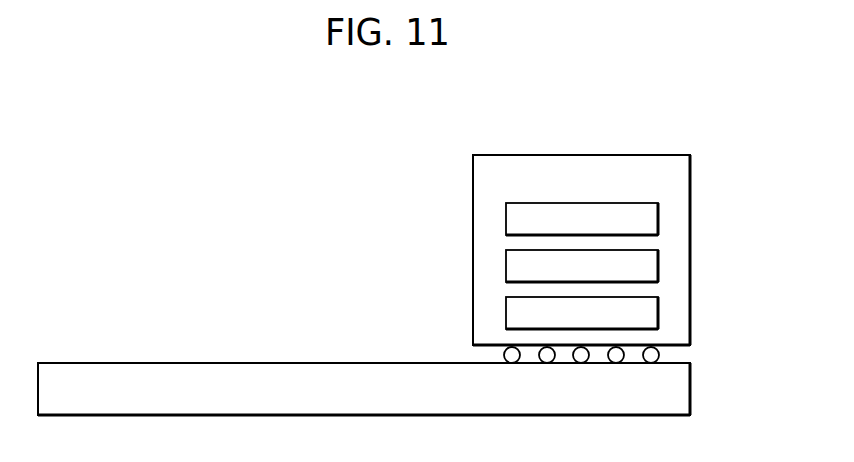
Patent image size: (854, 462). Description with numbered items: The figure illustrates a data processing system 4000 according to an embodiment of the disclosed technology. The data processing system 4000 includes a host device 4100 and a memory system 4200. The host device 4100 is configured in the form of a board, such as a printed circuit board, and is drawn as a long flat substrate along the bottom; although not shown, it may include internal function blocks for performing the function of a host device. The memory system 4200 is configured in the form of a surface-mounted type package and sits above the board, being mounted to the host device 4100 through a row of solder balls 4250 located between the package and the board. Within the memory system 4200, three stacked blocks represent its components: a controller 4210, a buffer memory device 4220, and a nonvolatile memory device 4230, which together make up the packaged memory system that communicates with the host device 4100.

The data processing system 4000 is at (104, 117).
The host device 4100 is at (364, 389).
The memory system 4200 is at (581, 250).
The controller 4210 is at (582, 219).
The buffer memory device 4220 is at (582, 266).
The nonvolatile memory device 4230 is at (582, 313).
The solder balls 4250 is at (670, 354).